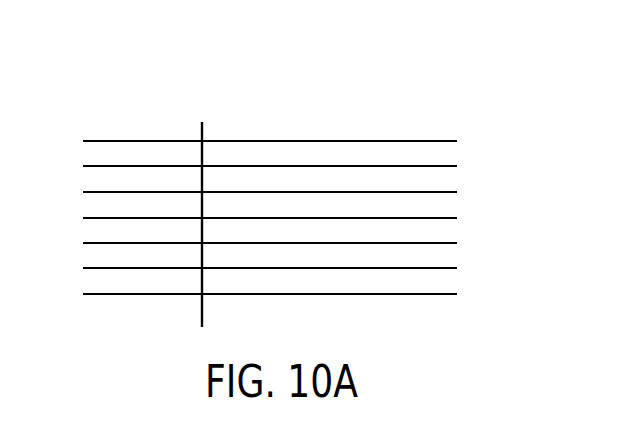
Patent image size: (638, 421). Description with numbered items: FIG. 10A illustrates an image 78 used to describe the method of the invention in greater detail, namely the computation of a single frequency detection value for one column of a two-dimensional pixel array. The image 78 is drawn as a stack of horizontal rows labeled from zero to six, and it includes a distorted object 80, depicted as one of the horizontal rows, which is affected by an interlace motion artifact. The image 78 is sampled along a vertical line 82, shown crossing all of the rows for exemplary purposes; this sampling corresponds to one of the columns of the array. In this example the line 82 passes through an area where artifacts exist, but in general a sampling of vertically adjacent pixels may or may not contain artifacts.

The image 78 is at (285, 167).
The distorted object 80 is at (302, 140).
The line 82 is at (201, 127).